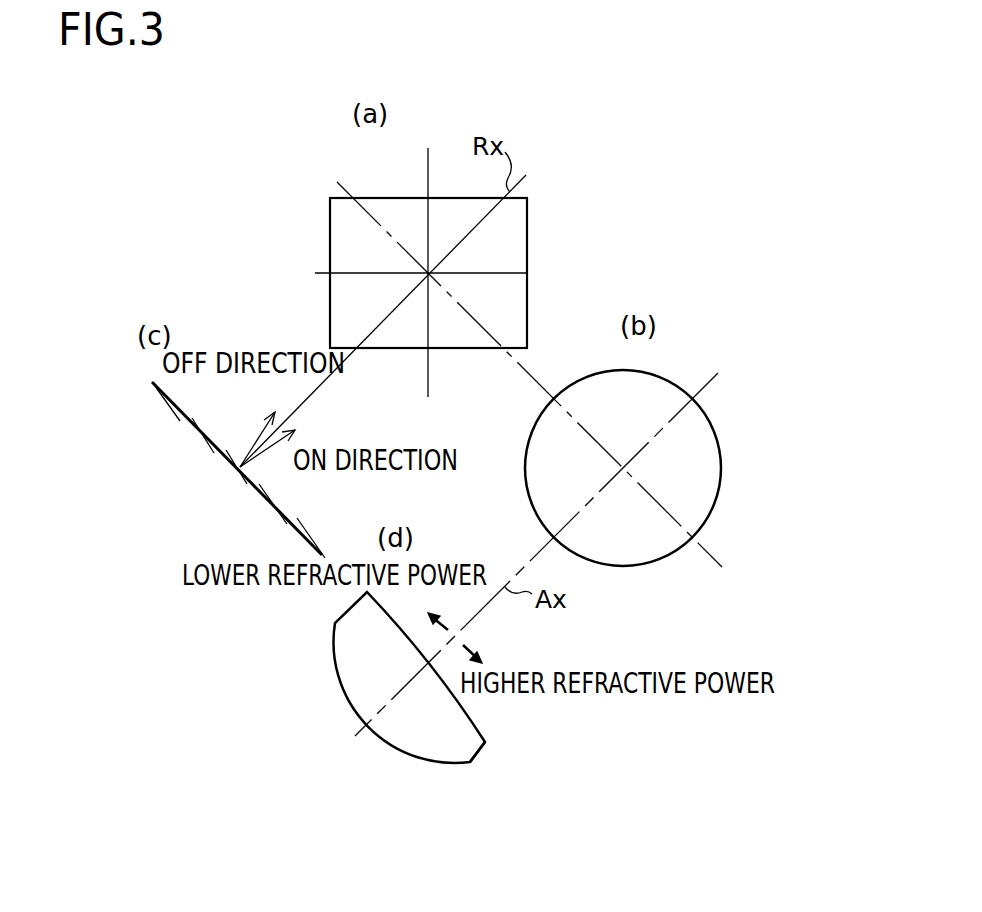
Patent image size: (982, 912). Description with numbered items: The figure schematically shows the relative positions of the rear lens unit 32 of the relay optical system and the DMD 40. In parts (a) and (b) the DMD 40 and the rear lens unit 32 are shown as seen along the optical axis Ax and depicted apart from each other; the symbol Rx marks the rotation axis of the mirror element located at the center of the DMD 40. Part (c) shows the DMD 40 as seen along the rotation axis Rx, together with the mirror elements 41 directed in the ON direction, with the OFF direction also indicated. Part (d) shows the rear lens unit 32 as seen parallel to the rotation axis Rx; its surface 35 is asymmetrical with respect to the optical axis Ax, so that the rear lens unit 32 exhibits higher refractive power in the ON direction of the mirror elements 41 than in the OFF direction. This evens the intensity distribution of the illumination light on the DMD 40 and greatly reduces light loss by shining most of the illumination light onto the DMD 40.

The rear lens unit 32 is at (708, 470).
The surface 35 is at (480, 733).
The DMD 40 is at (513, 242).
The mirror elements 41 is at (250, 483).